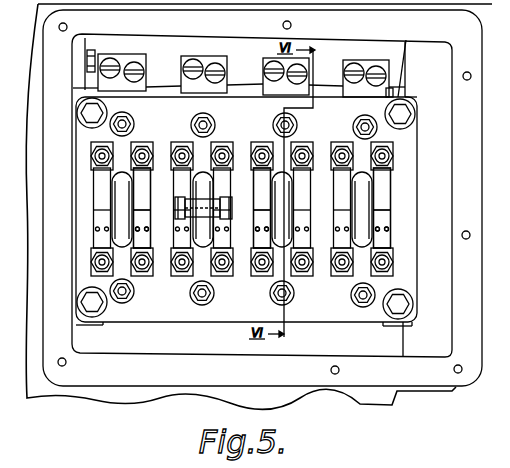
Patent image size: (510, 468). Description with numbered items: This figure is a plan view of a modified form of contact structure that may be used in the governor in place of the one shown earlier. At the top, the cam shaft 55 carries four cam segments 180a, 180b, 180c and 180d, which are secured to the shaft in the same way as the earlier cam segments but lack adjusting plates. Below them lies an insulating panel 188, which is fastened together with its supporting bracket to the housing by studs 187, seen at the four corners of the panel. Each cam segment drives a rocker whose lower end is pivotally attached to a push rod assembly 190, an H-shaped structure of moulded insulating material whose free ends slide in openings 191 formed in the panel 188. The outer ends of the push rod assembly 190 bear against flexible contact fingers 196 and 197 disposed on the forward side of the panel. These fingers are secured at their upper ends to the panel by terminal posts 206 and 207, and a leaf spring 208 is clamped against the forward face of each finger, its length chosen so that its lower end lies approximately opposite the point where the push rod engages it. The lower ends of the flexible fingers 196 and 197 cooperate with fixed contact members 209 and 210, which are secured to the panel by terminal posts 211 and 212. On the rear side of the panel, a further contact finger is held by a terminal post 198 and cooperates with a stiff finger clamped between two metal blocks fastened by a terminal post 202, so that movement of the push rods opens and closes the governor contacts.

The cam shaft 55 is at (238, 84).
The cam segment 180a is at (125, 58).
The cam segment 180b is at (206, 58).
The cam segment 180c is at (313, 60).
The cam segment 180d is at (379, 62).
The stud 187 is at (85, 110).
The insulating panel 188 is at (332, 318).
The push rod assembly 190 is at (221, 211).
The opening 191 is at (209, 218).
The flexible contact finger 196 is at (100, 221).
The flexible contact finger 197 is at (138, 218).
The terminal post 198 is at (195, 117).
The terminal post 202 is at (129, 302).
The terminal post 206 is at (91, 158).
The terminal post 207 is at (145, 150).
The leaf spring 208 is at (138, 187).
The fixed contact member 209 is at (146, 250).
The fixed contact member 210 is at (389, 251).
The terminal post 211 is at (91, 263).
The terminal post 212 is at (138, 279).